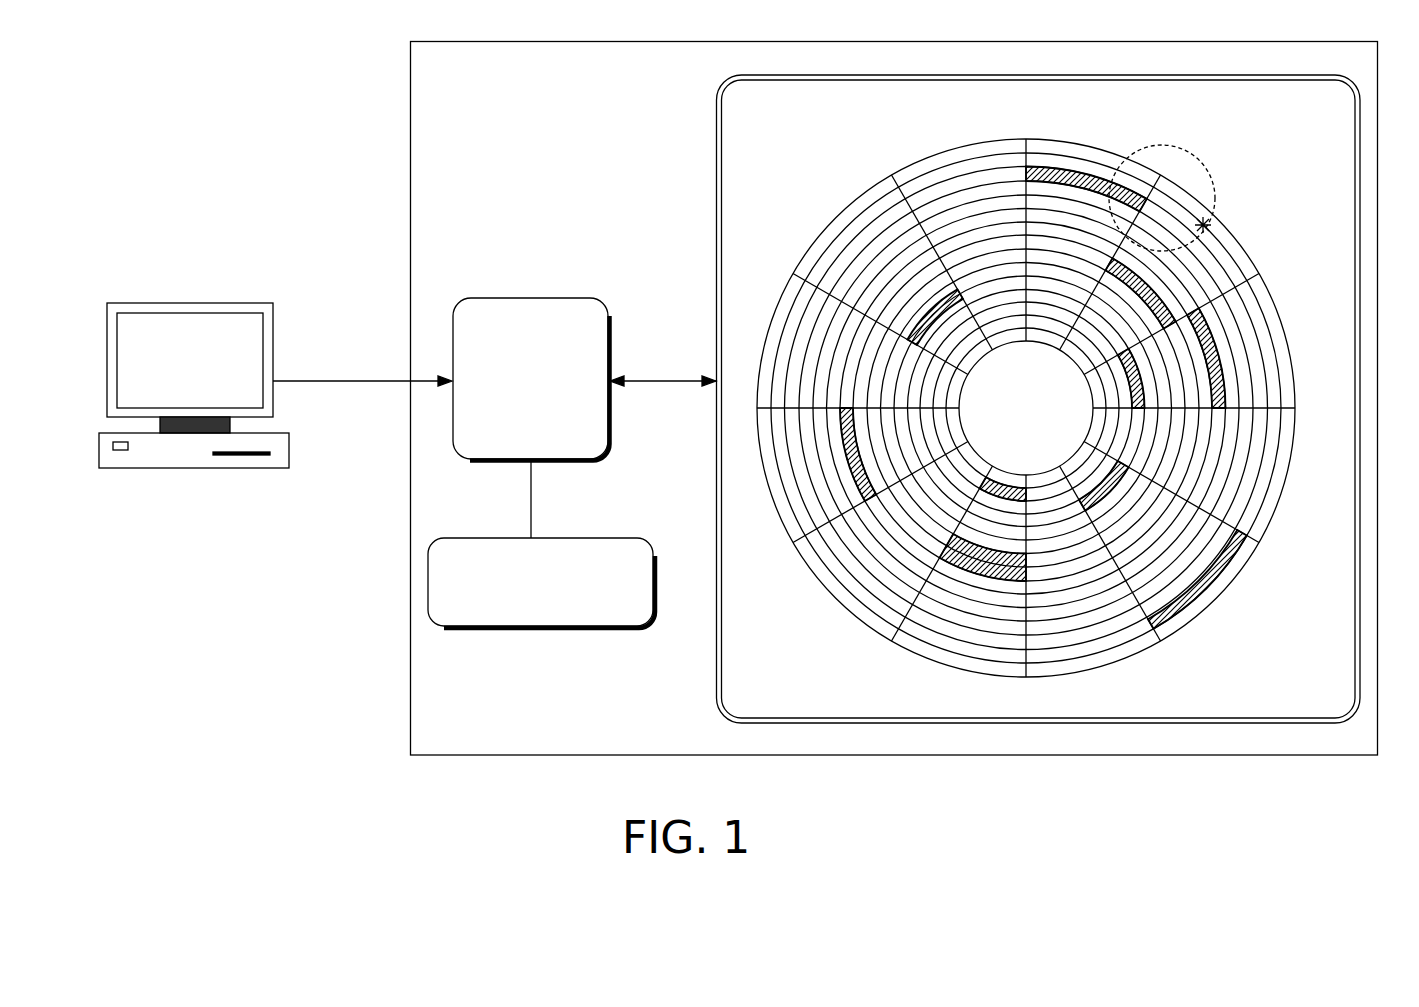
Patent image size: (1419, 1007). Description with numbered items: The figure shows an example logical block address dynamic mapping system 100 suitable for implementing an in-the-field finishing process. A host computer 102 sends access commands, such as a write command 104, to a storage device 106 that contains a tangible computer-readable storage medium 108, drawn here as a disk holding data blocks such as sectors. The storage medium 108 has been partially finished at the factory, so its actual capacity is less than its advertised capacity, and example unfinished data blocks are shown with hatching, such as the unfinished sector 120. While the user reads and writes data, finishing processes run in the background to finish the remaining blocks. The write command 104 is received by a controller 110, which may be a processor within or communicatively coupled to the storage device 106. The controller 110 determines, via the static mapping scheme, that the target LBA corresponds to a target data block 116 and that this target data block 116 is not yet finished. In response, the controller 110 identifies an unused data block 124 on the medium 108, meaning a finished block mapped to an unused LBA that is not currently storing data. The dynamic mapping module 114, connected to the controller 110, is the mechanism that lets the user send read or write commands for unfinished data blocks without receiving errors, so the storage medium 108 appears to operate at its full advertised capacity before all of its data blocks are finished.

The logical block address dynamic mapping system 100 is at (245, 127).
The host computer 102 is at (200, 302).
The write command 104 is at (375, 384).
The storage device 106 is at (407, 710).
The storage medium 108 is at (716, 151).
The controller 110 is at (512, 405).
The dynamic mapping module 114 is at (522, 621).
The target data block 116 is at (1088, 170).
The unfinished sector 120 is at (943, 296).
The unused data block 124 is at (1217, 243).